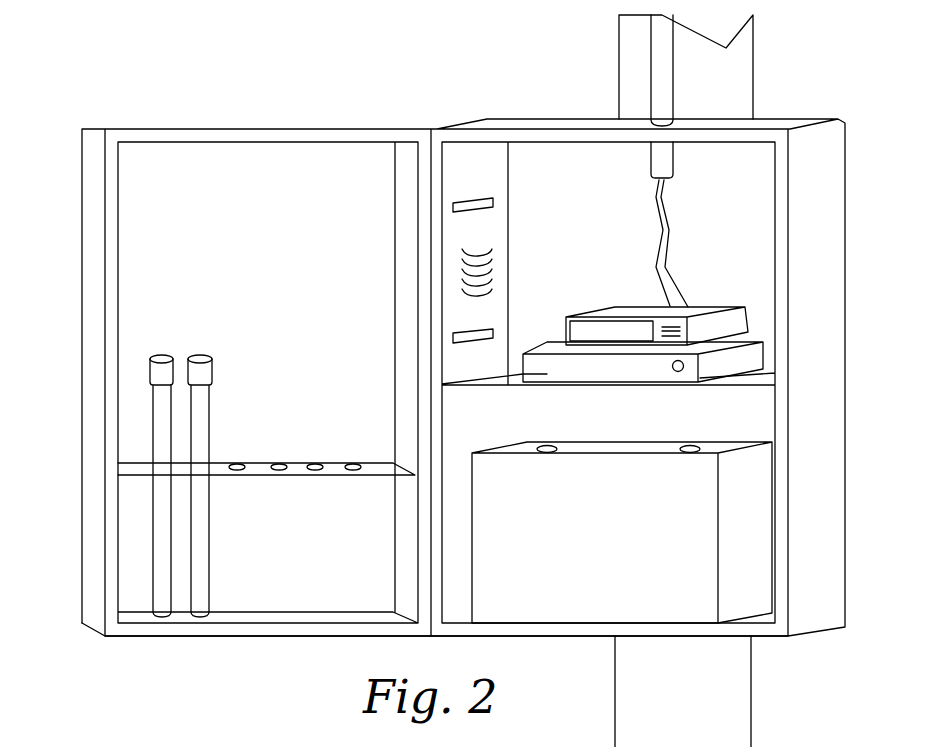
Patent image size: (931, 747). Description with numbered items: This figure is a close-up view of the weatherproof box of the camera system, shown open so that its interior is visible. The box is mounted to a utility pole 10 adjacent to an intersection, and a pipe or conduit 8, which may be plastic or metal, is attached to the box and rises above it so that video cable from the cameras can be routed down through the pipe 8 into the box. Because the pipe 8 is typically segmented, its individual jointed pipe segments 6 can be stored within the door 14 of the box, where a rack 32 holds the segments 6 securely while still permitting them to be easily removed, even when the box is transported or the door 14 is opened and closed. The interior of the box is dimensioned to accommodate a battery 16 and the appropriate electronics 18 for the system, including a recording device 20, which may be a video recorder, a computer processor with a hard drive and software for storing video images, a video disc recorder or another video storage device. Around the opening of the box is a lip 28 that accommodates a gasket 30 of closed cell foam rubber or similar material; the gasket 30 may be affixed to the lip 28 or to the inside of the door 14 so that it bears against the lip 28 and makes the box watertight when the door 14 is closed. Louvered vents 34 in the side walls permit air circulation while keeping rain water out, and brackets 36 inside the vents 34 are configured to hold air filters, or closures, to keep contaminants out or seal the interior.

The pipe segments 6 is at (163, 425).
The pipe or conduit 8 is at (662, 53).
The utility pole 10 is at (733, 65).
The door 14 is at (285, 182).
The battery 16 is at (740, 508).
The electronics 18 is at (535, 196).
The recording device 20 is at (673, 317).
The lip 28 is at (780, 613).
The gasket 30 is at (135, 137).
The rack 32 is at (132, 468).
The louvered vents 34 is at (482, 277).
The brackets 36 is at (480, 206).